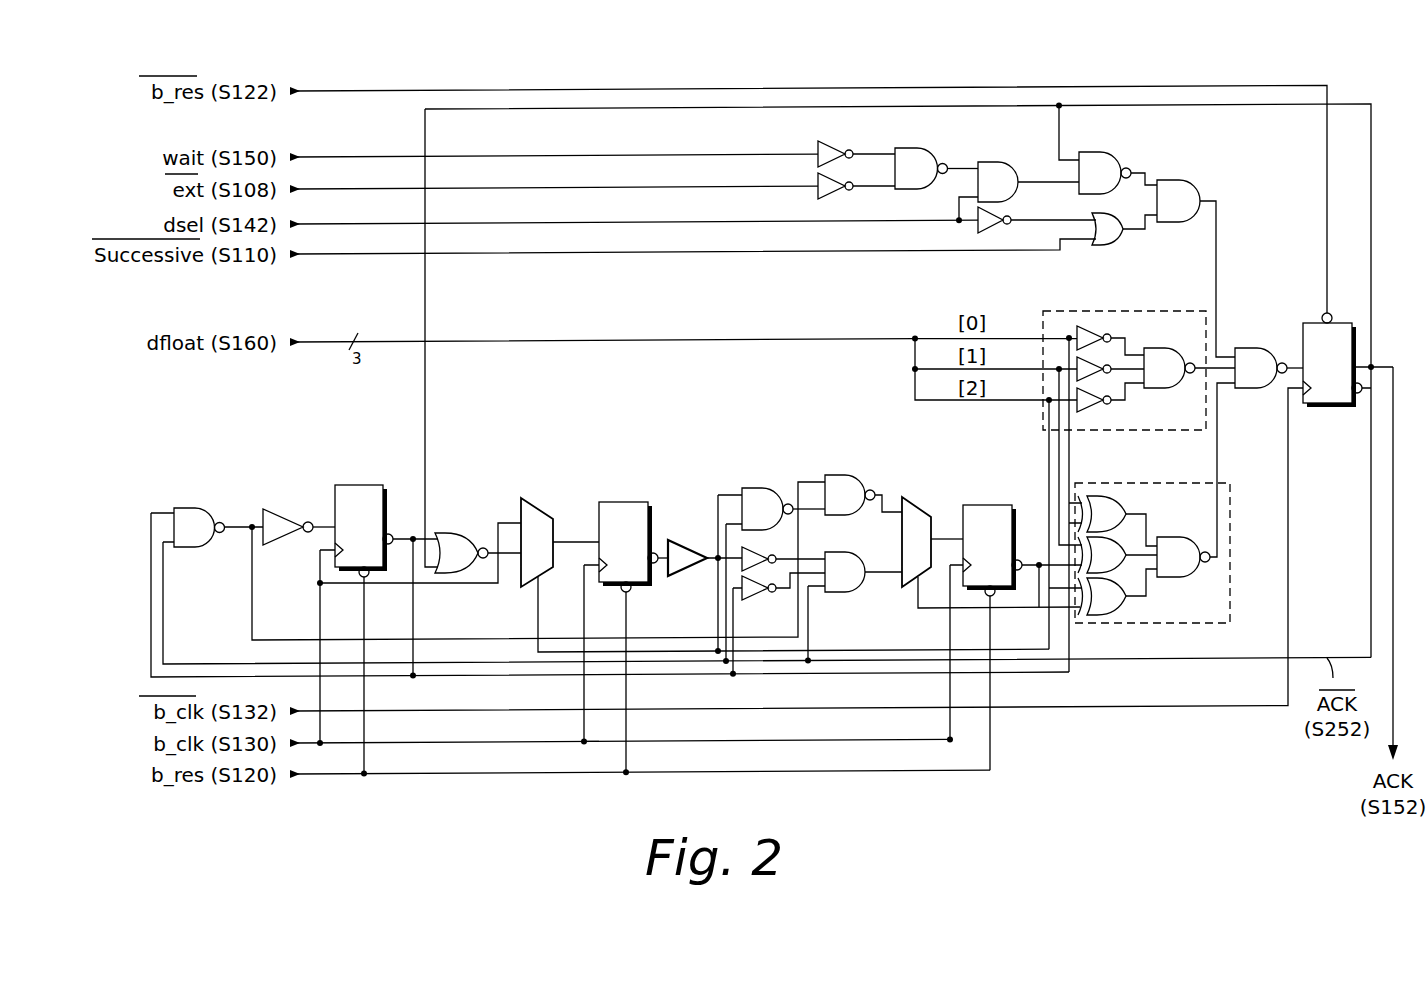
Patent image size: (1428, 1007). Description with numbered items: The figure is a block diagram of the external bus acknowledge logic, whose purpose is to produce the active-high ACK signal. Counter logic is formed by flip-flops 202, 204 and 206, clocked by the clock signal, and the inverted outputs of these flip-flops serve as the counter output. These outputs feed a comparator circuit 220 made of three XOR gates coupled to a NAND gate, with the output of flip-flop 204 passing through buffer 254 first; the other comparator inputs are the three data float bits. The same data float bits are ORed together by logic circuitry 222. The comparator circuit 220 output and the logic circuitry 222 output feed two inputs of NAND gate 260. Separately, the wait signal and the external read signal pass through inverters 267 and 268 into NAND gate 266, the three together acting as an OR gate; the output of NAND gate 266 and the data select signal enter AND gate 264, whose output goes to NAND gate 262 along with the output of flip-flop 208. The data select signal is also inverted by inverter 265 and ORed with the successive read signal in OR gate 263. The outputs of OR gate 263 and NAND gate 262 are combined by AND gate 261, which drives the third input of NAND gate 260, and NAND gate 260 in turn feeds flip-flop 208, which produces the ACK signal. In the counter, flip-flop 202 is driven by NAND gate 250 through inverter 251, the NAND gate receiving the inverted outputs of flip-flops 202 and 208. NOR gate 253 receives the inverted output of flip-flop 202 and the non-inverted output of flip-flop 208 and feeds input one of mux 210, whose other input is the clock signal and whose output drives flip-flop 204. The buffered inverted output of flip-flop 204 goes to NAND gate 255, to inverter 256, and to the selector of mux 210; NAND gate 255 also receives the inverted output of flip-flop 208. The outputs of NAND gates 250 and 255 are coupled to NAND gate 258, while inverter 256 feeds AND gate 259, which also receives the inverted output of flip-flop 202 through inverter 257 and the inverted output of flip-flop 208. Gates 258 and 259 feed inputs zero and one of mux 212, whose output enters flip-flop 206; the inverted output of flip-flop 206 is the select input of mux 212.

The flip-flop 202 is at (358, 484).
The flip-flop 204 is at (618, 501).
The flip-flop 206 is at (979, 504).
The flip-flop 208 is at (1336, 321).
The mux 210 is at (536, 500).
The mux 212 is at (909, 500).
The comparator circuit 220 is at (1165, 481).
The logic circuitry 222 is at (1163, 309).
The NAND gate 250 is at (198, 507).
The inverter 251 is at (278, 508).
The NOR gate 253 is at (459, 531).
The buffer 254 is at (679, 540).
The NAND gate 255 is at (747, 487).
The inverter 256 is at (740, 565).
The inverter 257 is at (748, 598).
The NAND gate 258 is at (832, 474).
The AND gate 259 is at (861, 551).
The NAND gate 260 is at (1241, 391).
The AND gate 261 is at (1176, 180).
The NAND gate 262 is at (1110, 152).
The OR gate 263 is at (1109, 247).
The AND gate 264 is at (1004, 162).
The inverter 265 is at (1007, 217).
The NAND gate 266 is at (927, 149).
The inverter 267 is at (848, 151).
The inverter 268 is at (848, 184).